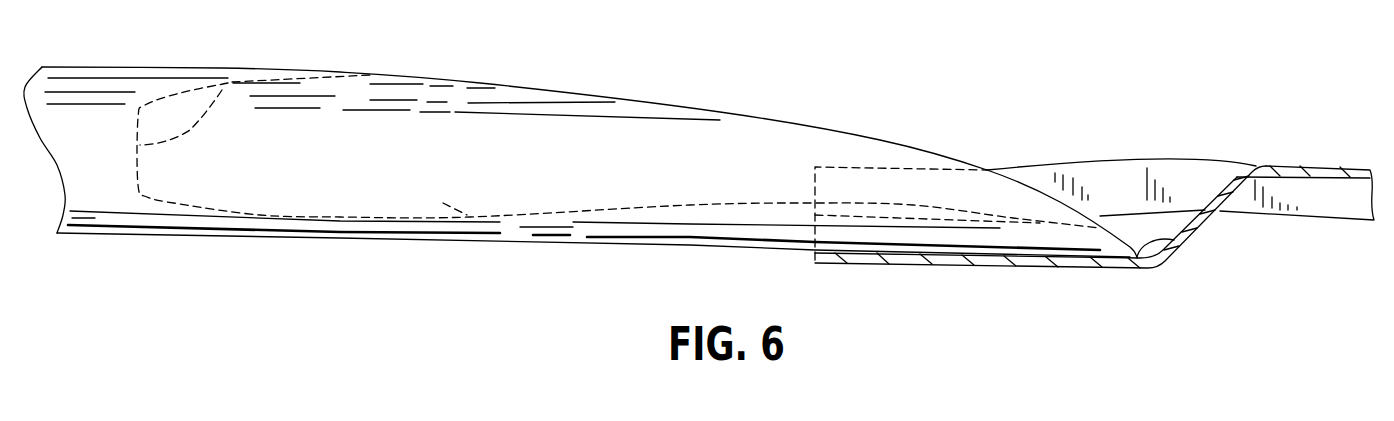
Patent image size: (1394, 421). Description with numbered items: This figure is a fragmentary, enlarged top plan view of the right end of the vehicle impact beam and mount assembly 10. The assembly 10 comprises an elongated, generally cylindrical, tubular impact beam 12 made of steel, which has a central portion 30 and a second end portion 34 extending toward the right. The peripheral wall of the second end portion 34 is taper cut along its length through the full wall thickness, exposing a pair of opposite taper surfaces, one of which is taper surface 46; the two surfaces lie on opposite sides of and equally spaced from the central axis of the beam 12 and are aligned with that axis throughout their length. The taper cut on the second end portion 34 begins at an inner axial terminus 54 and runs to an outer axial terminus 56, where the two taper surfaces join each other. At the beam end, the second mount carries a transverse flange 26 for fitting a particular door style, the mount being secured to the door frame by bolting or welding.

The vehicle impact beam and mount assembly 10 is at (148, 55).
The tubular impact beam 12 is at (67, 66).
The transverse flange 26 is at (1312, 166).
The central portion 30 is at (127, 213).
The second end portion 34 is at (477, 222).
The taper surface 46 is at (1028, 184).
The inner axial terminus 54 is at (228, 82).
The outer axial terminus 56 is at (1187, 236).